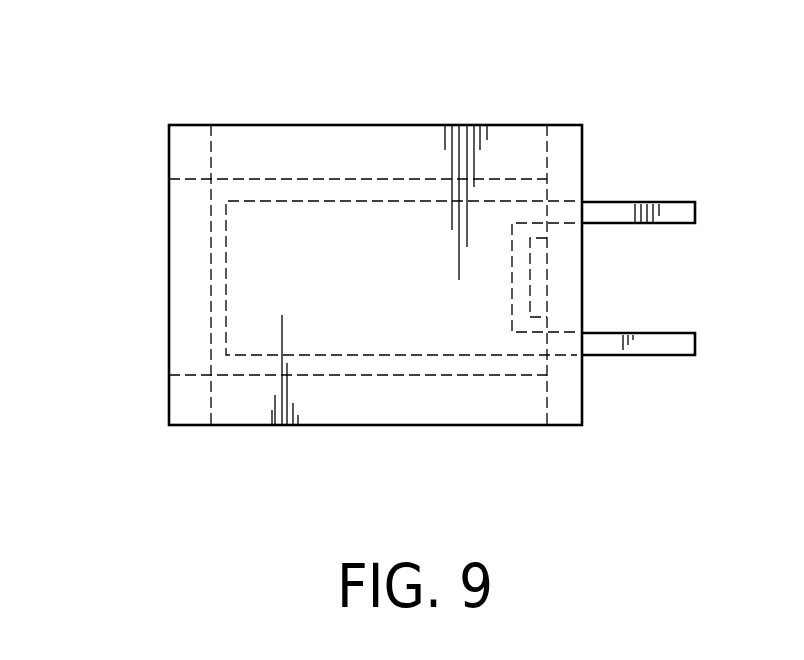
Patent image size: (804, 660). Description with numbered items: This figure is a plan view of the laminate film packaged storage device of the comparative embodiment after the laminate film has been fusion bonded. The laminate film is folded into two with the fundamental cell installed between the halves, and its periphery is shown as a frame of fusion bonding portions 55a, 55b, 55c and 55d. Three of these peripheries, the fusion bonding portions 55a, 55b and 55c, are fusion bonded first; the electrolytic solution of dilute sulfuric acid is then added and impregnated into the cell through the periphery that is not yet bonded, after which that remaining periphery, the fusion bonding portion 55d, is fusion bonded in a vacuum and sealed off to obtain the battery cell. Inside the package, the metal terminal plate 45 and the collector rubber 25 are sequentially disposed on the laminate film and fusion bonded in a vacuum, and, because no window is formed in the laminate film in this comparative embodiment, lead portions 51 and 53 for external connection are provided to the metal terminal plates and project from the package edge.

The collector rubber 25 is at (418, 375).
The metal terminal plate 45 is at (423, 200).
The lead portion 51 is at (645, 345).
The lead portion 53 is at (627, 208).
The fusion bonding portion 55a is at (328, 143).
The fusion bonding portion 55b is at (187, 283).
The fusion bonding portion 55c is at (557, 280).
The fusion bonding portion 55d is at (327, 398).